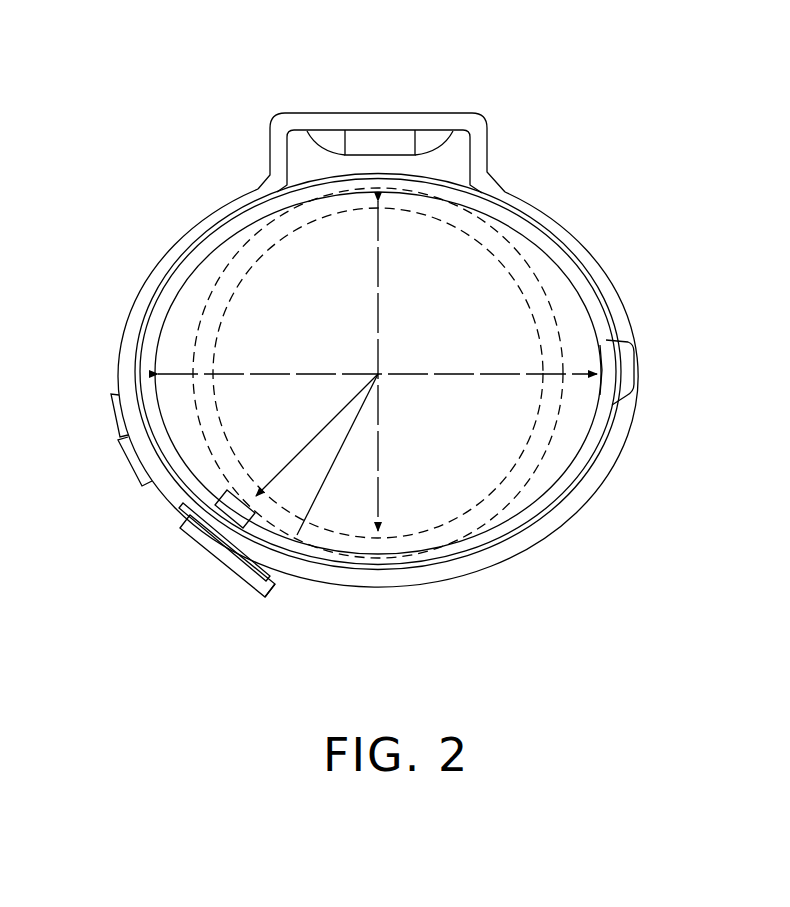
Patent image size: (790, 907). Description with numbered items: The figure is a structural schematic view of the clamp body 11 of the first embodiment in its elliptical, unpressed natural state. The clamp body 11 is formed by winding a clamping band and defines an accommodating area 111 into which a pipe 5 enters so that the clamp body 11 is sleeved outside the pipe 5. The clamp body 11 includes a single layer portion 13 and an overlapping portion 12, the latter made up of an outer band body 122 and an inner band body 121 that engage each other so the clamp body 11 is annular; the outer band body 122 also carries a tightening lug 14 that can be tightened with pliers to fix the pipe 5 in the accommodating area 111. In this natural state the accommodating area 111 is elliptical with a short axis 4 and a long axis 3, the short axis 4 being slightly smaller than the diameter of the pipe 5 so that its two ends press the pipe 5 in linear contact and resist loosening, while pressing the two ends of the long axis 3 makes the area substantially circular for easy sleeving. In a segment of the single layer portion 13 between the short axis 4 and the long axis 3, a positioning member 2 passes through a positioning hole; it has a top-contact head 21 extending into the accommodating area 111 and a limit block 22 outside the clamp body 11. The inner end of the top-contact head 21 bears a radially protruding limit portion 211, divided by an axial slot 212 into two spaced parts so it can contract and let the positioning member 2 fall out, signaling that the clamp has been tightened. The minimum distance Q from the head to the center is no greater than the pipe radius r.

The clamp body 11 is at (192, 103).
The tightening lug 14 is at (363, 128).
The overlapping portion 12 is at (339, 362).
The outer band body 122 is at (233, 203).
The inner band body 121 is at (212, 246).
The single layer portion 13 is at (526, 528).
The accommodating area 111 is at (572, 437).
The pipe 5 is at (543, 294).
The long axis 3 is at (612, 345).
The short axis 4 is at (384, 541).
The positioning member 2 is at (193, 554).
The top-contact head 21 is at (181, 508).
The limit block 22 is at (230, 548).
The limit portion 211 is at (225, 490).
The slot 212 is at (268, 588).